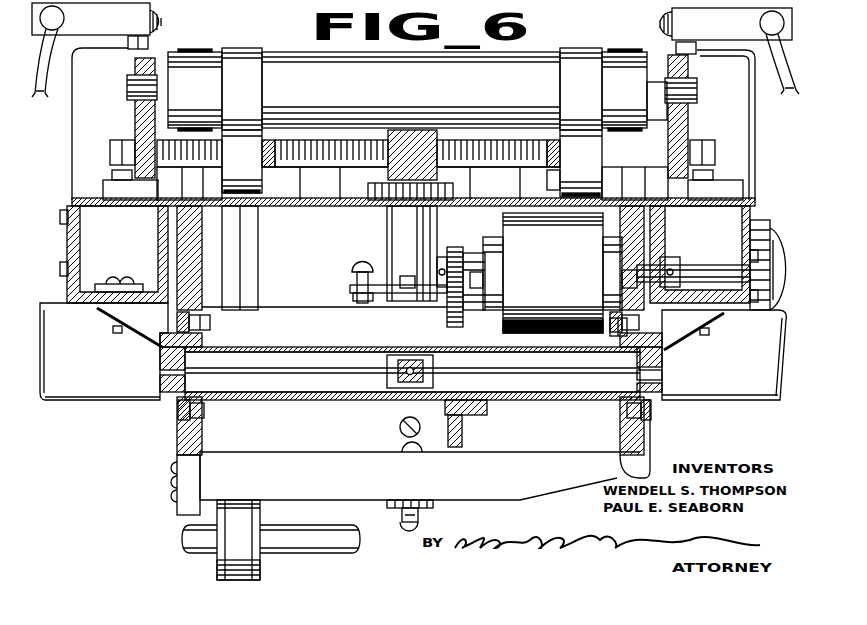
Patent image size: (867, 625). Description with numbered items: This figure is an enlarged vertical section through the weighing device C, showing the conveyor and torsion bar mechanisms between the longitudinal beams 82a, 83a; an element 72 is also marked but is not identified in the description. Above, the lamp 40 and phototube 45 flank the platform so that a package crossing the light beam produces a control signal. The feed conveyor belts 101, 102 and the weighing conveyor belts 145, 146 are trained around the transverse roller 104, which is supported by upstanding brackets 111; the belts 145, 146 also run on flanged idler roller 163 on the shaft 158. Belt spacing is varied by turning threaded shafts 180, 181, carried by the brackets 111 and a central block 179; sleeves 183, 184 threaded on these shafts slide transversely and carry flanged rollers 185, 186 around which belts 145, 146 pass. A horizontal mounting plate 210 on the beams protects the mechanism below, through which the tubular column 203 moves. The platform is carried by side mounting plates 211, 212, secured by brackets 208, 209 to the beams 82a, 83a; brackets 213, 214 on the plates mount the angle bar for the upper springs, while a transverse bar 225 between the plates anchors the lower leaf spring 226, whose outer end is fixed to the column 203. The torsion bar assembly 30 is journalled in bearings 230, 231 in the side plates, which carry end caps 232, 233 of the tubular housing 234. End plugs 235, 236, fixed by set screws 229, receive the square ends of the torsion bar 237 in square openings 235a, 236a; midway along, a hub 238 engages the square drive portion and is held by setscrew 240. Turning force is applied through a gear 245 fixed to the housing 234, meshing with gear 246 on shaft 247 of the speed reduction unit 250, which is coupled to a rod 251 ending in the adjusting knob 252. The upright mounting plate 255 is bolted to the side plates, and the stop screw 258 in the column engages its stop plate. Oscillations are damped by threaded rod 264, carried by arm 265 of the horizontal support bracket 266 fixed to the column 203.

The torsion bar assembly 30 is at (354, 339).
The lamp 40 is at (732, 31).
The phototube 45 is at (82, 25).
The housing 72 is at (62, 247).
The longitudinal beam 82a is at (695, 212).
The longitudinal beam 83a is at (128, 212).
The endless belt 101 is at (626, 60).
The endless belt 102 is at (202, 60).
The transverse roller 104 is at (400, 84).
The upstanding bracket 111 is at (145, 125).
The endless belt 145 is at (578, 73).
The endless belt 146 is at (252, 73).
The shaft 158 is at (318, 540).
The flanged idler roller 163 is at (240, 515).
The central block 179 is at (415, 143).
The threaded shaft 180 is at (458, 150).
The threaded shaft 181 is at (355, 153).
The sleeve 183 is at (555, 138).
The sleeve 184 is at (292, 125).
The flanged roller 185 is at (590, 148).
The flanged roller 186 is at (238, 145).
The tubular column 203 is at (405, 228).
The bracket 208 is at (665, 335).
The bracket 209 is at (130, 315).
The horizontal mounting plate 210 is at (345, 210).
The side mounting plate 211 is at (625, 440).
The side mounting plate 212 is at (185, 268).
The upstanding bracket 213 is at (633, 183).
The upstanding bracket 214 is at (185, 183).
The transverse bar 225 is at (297, 476).
The leaf spring 226 is at (415, 500).
The set screws 229 is at (175, 406).
The bearing 230 is at (635, 322).
The bearing 231 is at (203, 318).
The end cap 232 is at (657, 352).
The end cap 233 is at (165, 340).
The tubular housing 234 is at (382, 400).
The end plug 235 is at (658, 392).
The square central opening 235a is at (658, 377).
The end plug 236 is at (160, 385).
The square central opening 236a is at (160, 366).
The torsion bar 237 is at (325, 370).
The hub 238 is at (430, 380).
The setscrew 240 is at (390, 372).
The gear 245 is at (450, 312).
The gear 246 is at (450, 292).
The shaft 247 is at (662, 268).
The gear type speed reduction unit 250 is at (572, 275).
The rod 251 is at (732, 268).
The adjusting knob 252 is at (784, 300).
The upright mounting plate 255 is at (255, 339).
The stop screw 258 is at (400, 523).
The threaded rod 264 is at (355, 300).
The arm 265 is at (355, 290).
The horizontal support bracket 266 is at (405, 280).